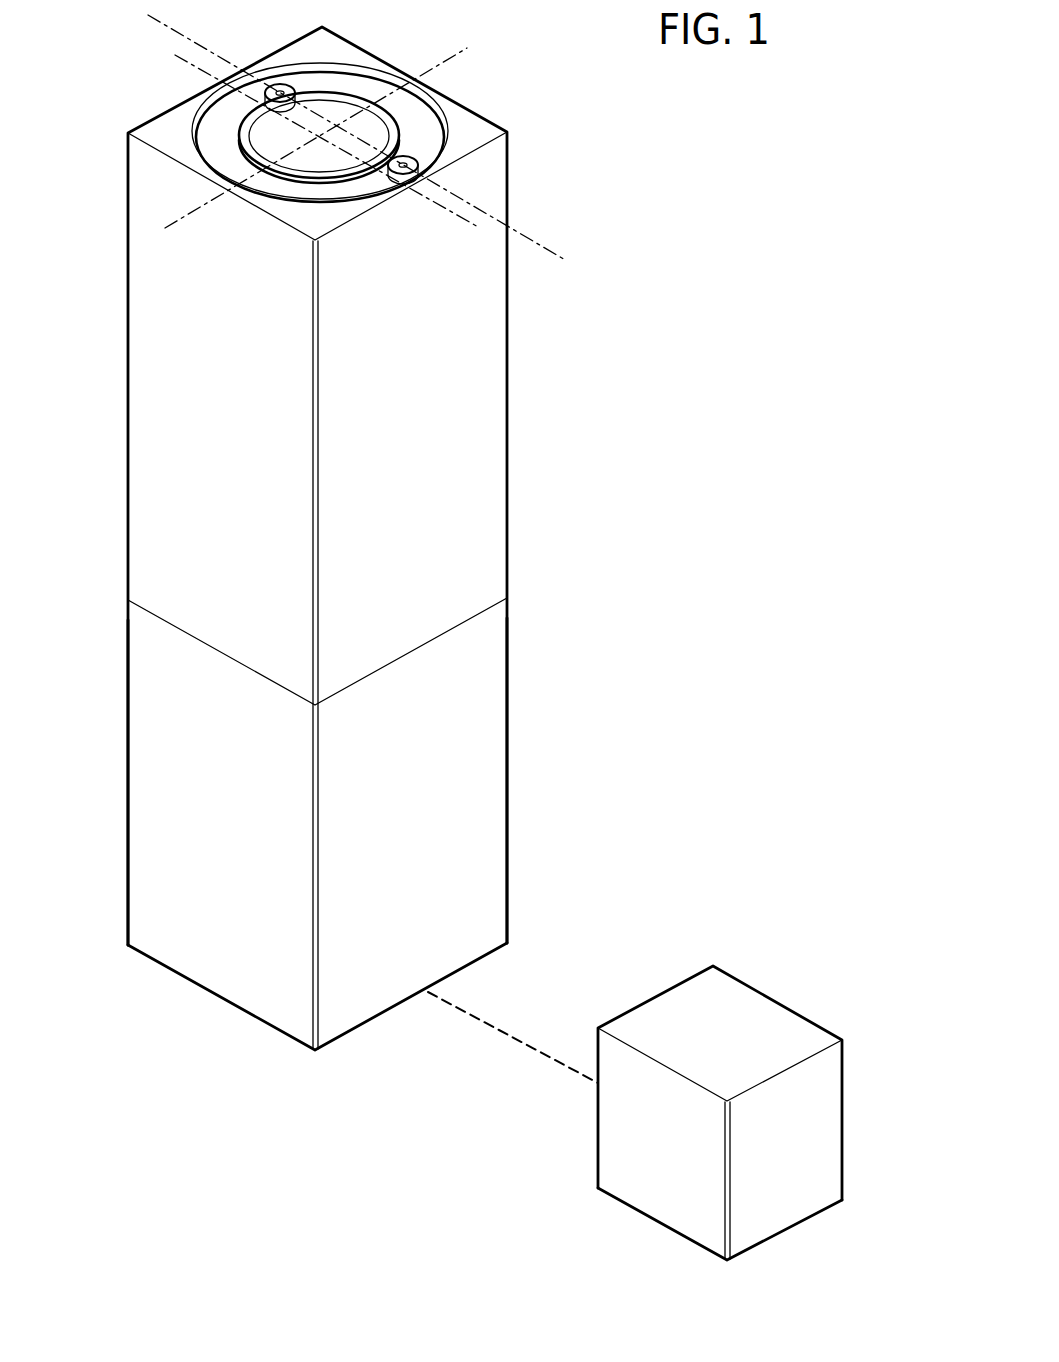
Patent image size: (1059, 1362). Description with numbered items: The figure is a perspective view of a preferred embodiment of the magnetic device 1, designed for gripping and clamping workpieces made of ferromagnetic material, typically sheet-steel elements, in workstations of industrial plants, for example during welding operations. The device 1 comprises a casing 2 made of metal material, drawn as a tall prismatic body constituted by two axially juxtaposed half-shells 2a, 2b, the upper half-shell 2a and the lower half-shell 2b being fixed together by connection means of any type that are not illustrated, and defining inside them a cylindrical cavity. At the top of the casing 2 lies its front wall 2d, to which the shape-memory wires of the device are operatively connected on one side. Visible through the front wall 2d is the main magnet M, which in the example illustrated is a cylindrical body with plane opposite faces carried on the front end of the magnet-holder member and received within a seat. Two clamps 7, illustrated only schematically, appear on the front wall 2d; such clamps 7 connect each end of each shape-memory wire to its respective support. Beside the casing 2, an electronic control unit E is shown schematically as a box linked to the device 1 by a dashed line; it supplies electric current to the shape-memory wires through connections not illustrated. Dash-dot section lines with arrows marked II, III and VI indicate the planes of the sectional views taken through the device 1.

The magnetic device 1 is at (687, 357).
The casing 2 is at (128, 420).
The half-shell 2a is at (143, 538).
The half-shell 2b is at (142, 745).
The front wall 2d is at (217, 150).
The clamps 7 is at (288, 88).
The main magnet M is at (336, 110).
The electronic control unit E is at (718, 992).
The section line II is at (192, 63).
The section line III is at (163, 24).
The section line VI is at (457, 58).